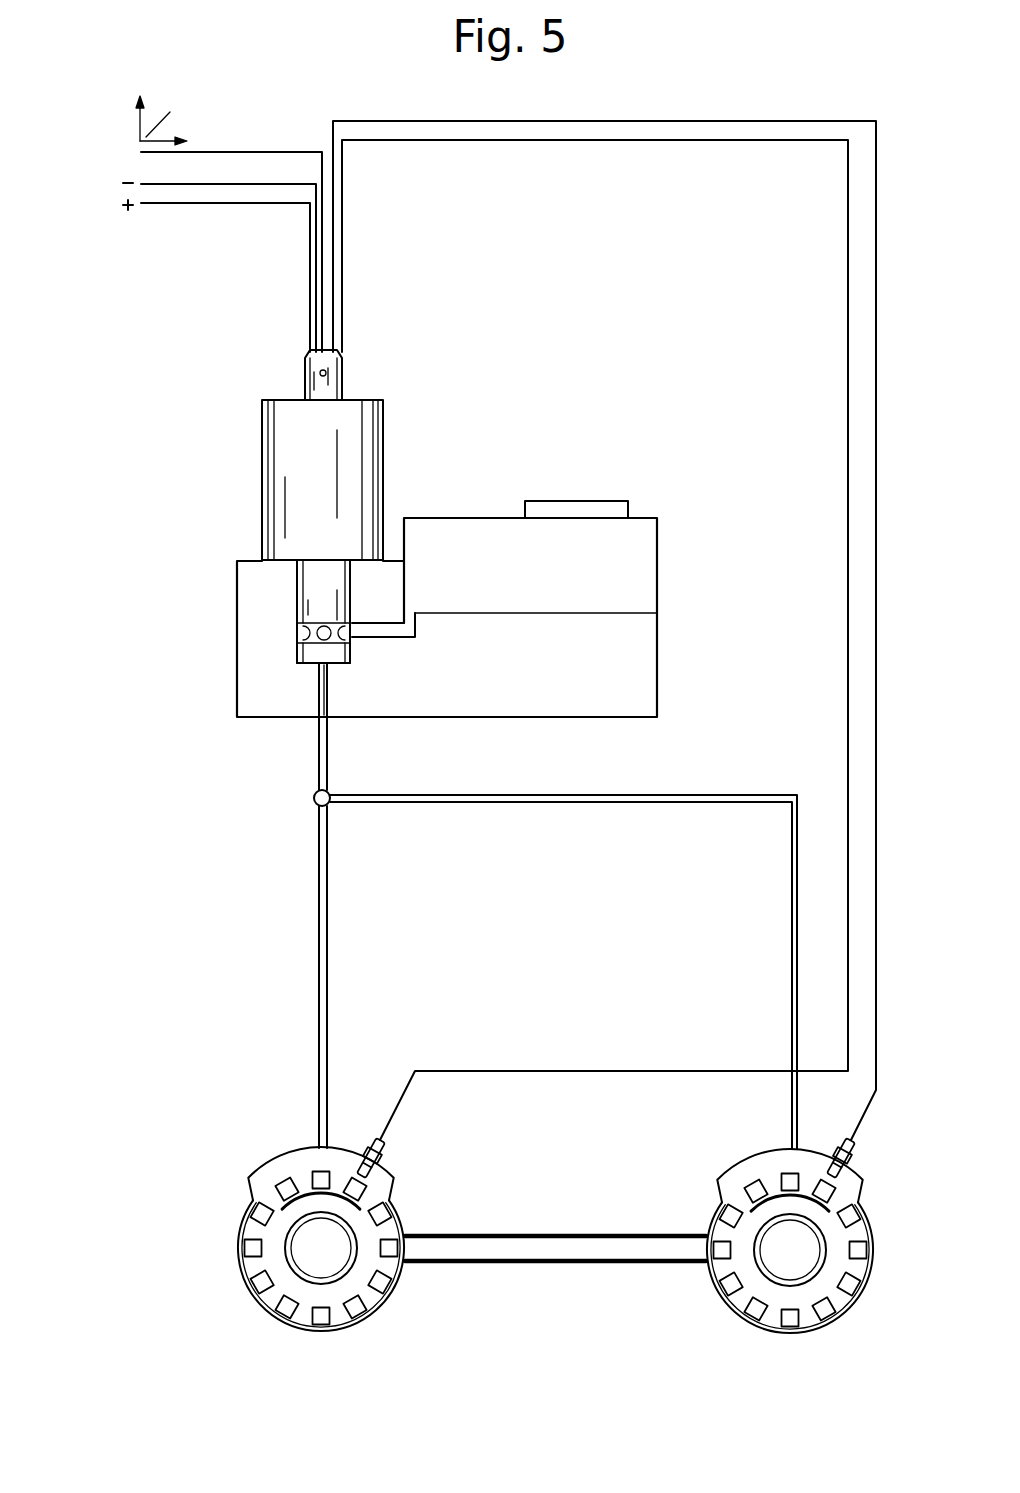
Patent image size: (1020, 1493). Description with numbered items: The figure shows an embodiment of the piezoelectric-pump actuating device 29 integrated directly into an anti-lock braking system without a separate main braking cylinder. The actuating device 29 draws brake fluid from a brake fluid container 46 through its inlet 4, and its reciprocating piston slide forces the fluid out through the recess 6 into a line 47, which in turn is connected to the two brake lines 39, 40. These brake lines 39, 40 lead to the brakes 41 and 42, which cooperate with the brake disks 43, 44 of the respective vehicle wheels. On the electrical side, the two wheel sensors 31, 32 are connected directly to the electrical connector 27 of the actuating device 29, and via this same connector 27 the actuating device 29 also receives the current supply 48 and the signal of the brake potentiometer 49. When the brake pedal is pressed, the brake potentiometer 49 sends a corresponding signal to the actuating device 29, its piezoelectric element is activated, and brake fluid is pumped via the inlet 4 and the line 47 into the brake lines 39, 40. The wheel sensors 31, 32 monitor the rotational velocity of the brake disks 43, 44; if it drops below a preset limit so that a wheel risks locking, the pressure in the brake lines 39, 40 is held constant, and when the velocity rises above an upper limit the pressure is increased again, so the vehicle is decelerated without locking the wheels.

The inlet 4 is at (377, 633).
The recess 6 is at (297, 658).
The electrical connector 27 is at (338, 377).
The actuating device 29 is at (347, 468).
The wheel sensor 31 is at (847, 1145).
The wheel sensor 32 is at (380, 1148).
The brake line 39 is at (635, 803).
The brake line 40 is at (323, 938).
The brake 41 is at (740, 1162).
The brake 42 is at (275, 1165).
The brake disk 43 is at (823, 1282).
The brake disk 44 is at (352, 1280).
The brake fluid container 46 is at (627, 670).
The line 47 is at (313, 707).
The current supply 48 is at (122, 190).
The brake potentiometer 49 is at (140, 120).